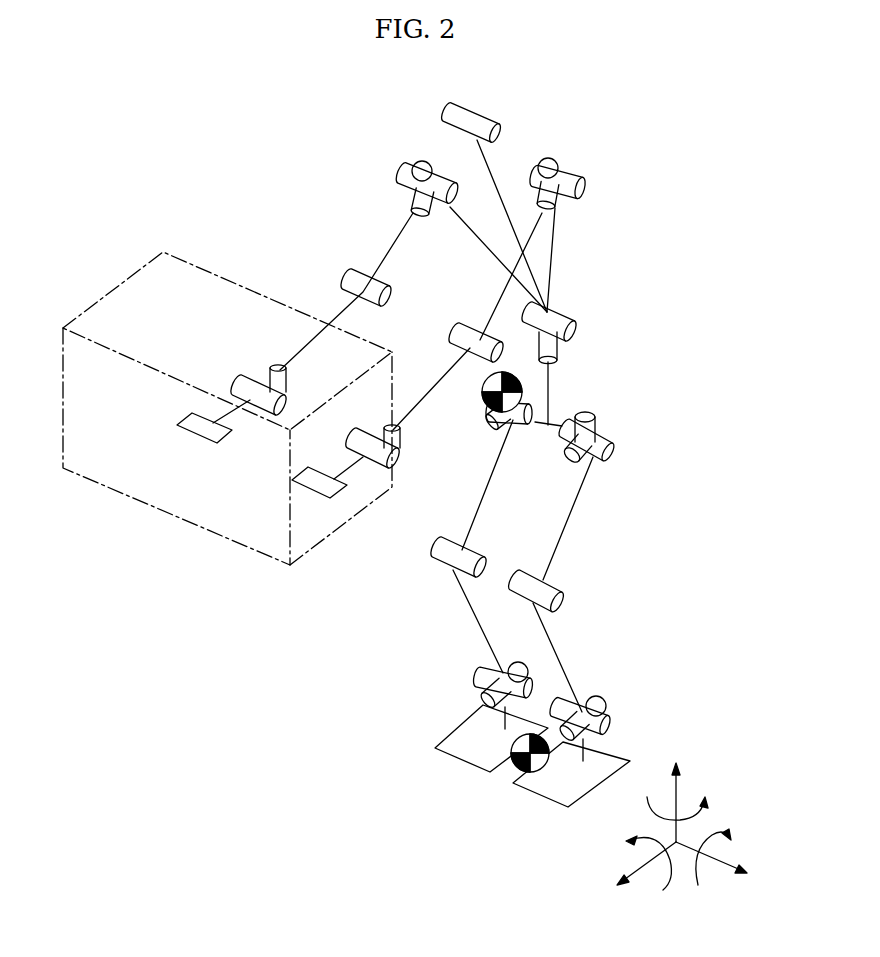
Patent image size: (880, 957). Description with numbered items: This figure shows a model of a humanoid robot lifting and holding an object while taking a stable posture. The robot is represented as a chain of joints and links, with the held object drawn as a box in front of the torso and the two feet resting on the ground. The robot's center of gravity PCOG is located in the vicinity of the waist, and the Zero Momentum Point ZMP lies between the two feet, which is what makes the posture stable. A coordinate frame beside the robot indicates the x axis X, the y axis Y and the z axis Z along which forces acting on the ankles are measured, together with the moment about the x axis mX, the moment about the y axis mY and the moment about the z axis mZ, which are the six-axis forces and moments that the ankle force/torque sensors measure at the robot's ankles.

The center of gravity PCOG is at (488, 401).
The Zero Momentum Point ZMP is at (515, 765).
The x axis X is at (639, 869).
The y axis Y is at (720, 864).
The z axis Z is at (677, 791).
The moment about x axis mX is at (635, 861).
The moment about y axis mY is at (725, 857).
The moment about z axis mZ is at (683, 801).